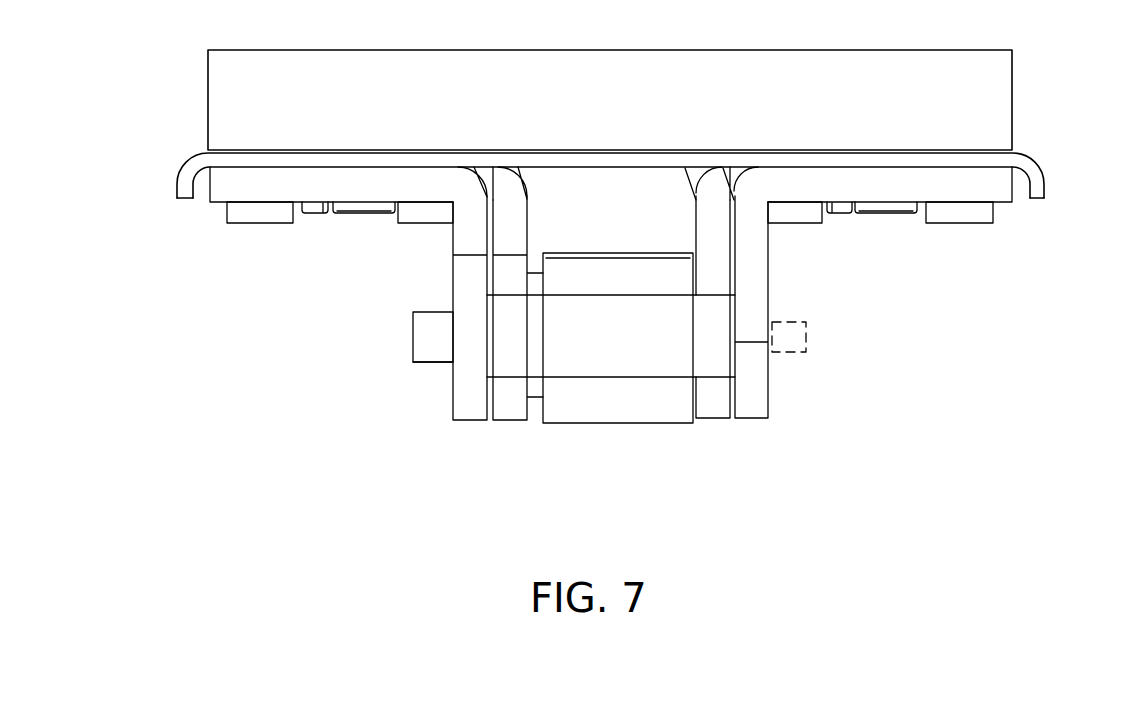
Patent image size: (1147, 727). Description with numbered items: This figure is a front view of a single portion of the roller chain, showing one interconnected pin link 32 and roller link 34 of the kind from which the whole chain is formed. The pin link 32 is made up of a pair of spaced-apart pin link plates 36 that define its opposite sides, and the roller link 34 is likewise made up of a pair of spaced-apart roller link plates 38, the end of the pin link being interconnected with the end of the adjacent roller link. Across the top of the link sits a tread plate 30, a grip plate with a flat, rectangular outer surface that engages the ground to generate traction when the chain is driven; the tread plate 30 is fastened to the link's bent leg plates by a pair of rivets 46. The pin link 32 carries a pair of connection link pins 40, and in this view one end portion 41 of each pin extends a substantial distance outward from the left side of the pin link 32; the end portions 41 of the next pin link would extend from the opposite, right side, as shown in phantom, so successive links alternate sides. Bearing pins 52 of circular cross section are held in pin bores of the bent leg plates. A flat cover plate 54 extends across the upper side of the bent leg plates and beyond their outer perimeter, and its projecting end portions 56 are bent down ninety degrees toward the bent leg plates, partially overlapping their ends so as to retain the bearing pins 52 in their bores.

The tread plate 30 is at (539, 112).
The pin link 32 is at (773, 367).
The roller link 34 is at (722, 424).
The pin link plate 36 is at (463, 422).
The roller link plate 38 is at (503, 422).
The connection link pin 40 is at (447, 315).
The link pin end portion 41 is at (423, 362).
The rivet 46 is at (352, 215).
The bearing pin 52 is at (242, 223).
The cover plate 54 is at (1026, 152).
The projecting end portion 56 is at (175, 180).